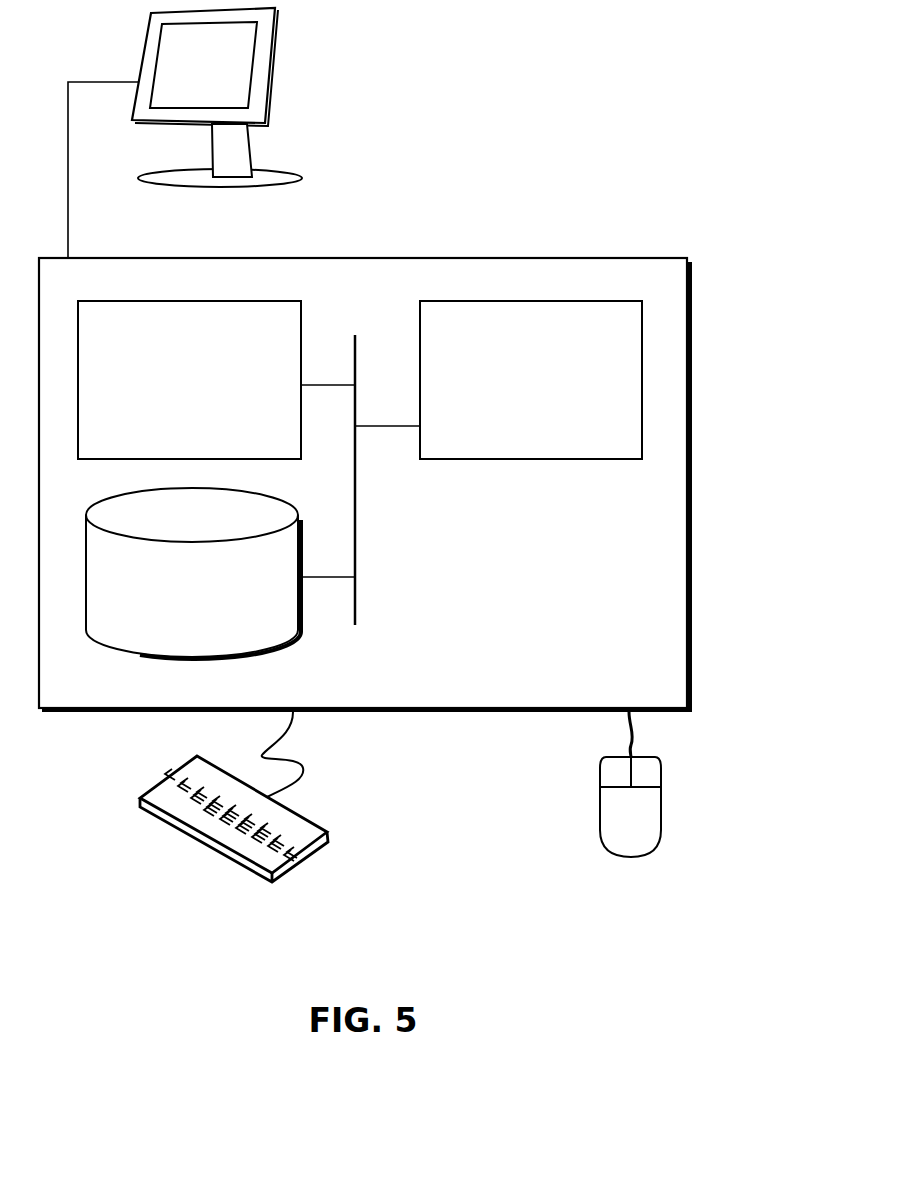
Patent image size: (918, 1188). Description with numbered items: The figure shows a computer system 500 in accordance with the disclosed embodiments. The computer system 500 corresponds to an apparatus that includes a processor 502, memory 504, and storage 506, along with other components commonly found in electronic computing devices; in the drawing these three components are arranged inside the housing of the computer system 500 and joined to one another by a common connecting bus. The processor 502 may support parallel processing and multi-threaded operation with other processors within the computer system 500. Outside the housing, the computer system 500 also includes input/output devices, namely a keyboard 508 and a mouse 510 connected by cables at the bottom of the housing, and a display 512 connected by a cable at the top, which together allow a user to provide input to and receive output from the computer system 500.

The computer system 500 is at (409, 238).
The processor 502 is at (514, 392).
The memory 504 is at (168, 392).
The storage 506 is at (175, 601).
The keyboard 508 is at (158, 817).
The mouse 510 is at (611, 827).
The display 512 is at (185, 133).